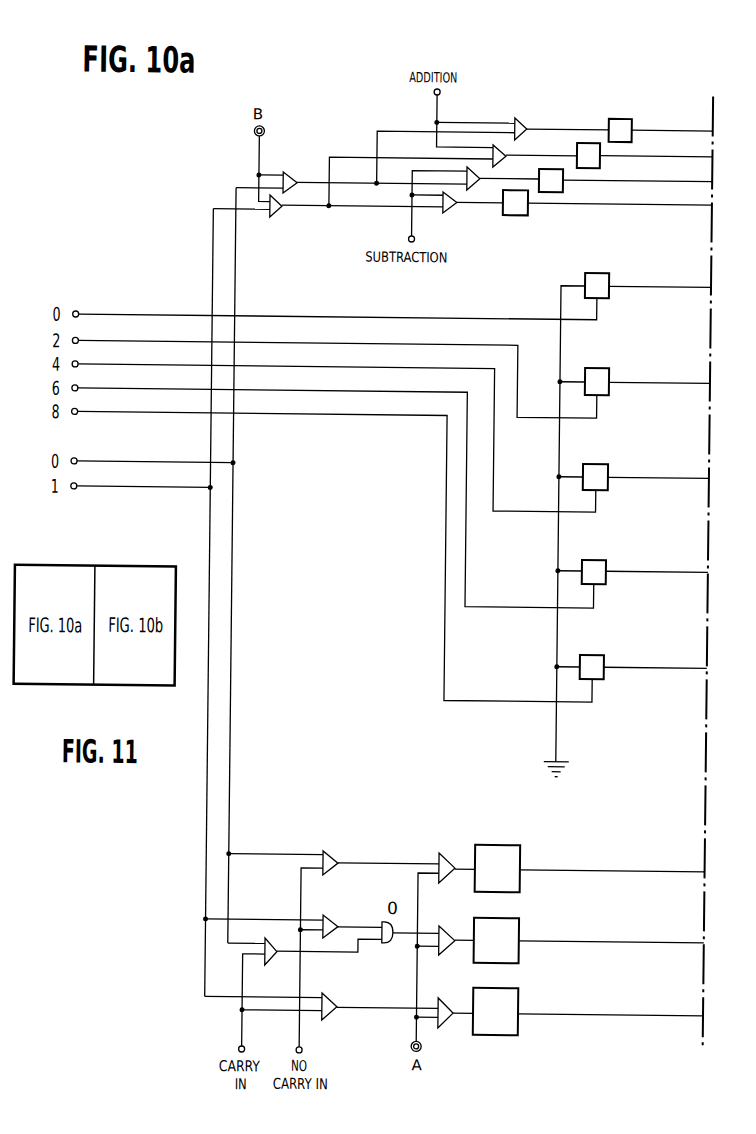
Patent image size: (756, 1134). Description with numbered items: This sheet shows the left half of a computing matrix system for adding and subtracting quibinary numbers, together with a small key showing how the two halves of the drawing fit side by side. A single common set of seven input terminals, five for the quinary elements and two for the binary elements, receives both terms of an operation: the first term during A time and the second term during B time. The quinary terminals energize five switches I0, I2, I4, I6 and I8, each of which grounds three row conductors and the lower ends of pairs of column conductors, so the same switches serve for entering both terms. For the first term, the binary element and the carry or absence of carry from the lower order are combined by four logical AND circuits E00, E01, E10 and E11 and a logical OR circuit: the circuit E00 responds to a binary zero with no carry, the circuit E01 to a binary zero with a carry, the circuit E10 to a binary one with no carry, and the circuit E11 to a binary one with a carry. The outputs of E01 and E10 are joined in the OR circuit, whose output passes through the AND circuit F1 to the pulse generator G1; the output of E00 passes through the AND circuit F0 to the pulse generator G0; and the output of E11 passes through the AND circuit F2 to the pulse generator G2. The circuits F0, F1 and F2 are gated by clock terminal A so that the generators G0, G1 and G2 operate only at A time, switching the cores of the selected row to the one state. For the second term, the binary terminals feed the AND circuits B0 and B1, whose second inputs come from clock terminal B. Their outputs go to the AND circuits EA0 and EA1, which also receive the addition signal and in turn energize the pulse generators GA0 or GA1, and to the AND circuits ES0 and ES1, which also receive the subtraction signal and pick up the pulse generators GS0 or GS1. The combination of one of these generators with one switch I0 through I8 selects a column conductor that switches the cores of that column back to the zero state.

In FIG. 10a, the logical AND circuit B0 is at (282, 174).
In FIG. 10a, the logical AND circuit B1 is at (276, 217).
In FIG. 10a, the logical AND circuit EA0 is at (517, 118).
In FIG. 10a, the logical AND circuit EA1 is at (498, 159).
In FIG. 10a, the pulse generator GA0 is at (605, 121).
In FIG. 10a, the pulse generator GA1 is at (572, 146).
In FIG. 10a, the logical AND circuit ES0 is at (471, 182).
In FIG. 10a, the logical AND circuit ES1 is at (453, 211).
In FIG. 10a, the pulse generator GS0 is at (559, 186).
In FIG. 10a, the pulse generator GS1 is at (524, 208).
In FIG. 10a, the switch I0 is at (606, 291).
In FIG. 10a, the switch I2 is at (607, 390).
In FIG. 10a, the switch I4 is at (607, 485).
In FIG. 10a, the switch I6 is at (606, 578).
In FIG. 10a, the switch I8 is at (605, 673).
In FIG. 11, the logical AND circuit E00 is at (337, 856).
In FIG. 11, the logical AND circuit E10 is at (336, 921).
In FIG. 11, the logical AND circuit E01 is at (275, 964).
In FIG. 11, the logical AND circuit E11 is at (336, 996).
In FIG. 11, the logical AND circuit F0 is at (451, 856).
In FIG. 11, the logical AND circuit F1 is at (453, 926).
In FIG. 11, the logical AND circuit F2 is at (454, 1000).
In FIG. 11, the pulse generator G0 is at (590, 870).
In FIG. 11, the pulse generator G1 is at (589, 942).
In FIG. 11, the pulse generator G2 is at (588, 1013).